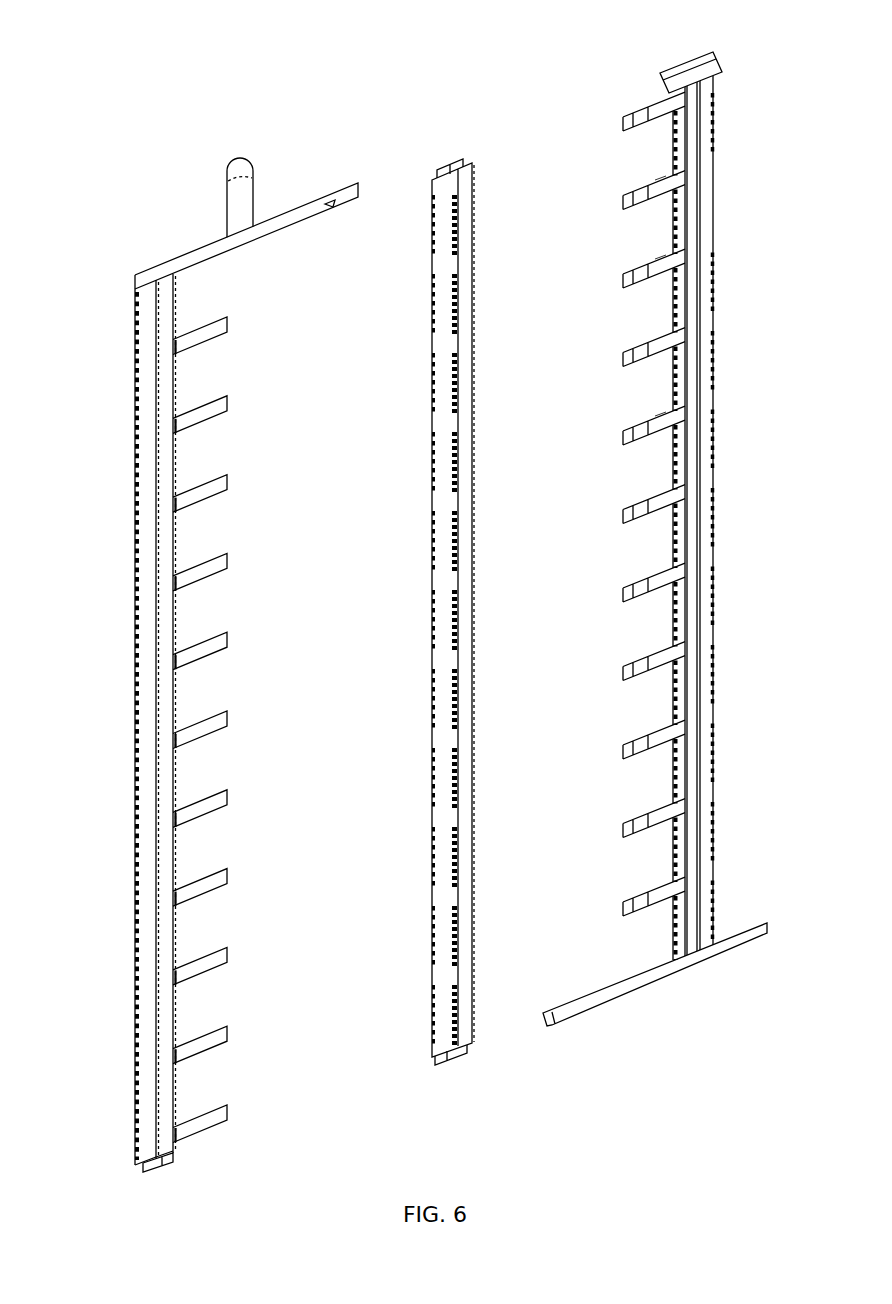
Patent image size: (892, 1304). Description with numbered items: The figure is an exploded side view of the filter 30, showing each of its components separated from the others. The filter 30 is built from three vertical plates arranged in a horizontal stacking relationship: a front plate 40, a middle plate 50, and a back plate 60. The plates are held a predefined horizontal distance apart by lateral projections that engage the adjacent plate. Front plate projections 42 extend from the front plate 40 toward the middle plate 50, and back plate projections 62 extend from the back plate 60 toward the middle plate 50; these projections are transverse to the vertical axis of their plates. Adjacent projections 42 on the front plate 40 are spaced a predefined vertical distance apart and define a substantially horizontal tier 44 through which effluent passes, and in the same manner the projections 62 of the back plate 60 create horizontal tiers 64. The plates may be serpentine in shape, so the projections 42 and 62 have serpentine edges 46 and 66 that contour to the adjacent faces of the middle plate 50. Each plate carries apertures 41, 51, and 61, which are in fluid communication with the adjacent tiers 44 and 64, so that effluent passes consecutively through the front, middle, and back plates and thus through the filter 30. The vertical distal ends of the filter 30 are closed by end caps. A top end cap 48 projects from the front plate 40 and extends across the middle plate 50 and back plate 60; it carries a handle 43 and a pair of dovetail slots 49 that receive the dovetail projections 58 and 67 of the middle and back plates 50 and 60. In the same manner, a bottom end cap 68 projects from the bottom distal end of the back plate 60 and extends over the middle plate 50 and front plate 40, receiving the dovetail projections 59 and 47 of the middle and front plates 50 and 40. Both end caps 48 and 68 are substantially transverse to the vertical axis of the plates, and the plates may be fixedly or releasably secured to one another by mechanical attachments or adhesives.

The filter 30 is at (100, 127).
The front plate 40 is at (183, 183).
The apertures 41 is at (135, 492).
The front plate projections 42 is at (228, 481).
The handle 43 is at (243, 188).
The horizontal tier 44 is at (220, 438).
The serpentine edges 46 is at (229, 1033).
The dovetail projection 47 is at (160, 1170).
The top end cap 48 is at (175, 262).
The dovetail slots 49 is at (331, 207).
The middle plate 50 is at (445, 145).
The apertures 51 is at (432, 330).
The dovetail projection 58 is at (458, 162).
The dovetail projection 59 is at (452, 1060).
The back plate 60 is at (618, 90).
The apertures 61 is at (716, 218).
The back plate projections 62 is at (658, 427).
The horizontal tiers 64 is at (637, 318).
The serpentine edges 66 is at (628, 362).
The dovetail projection 67 is at (716, 54).
The bottom end cap 68 is at (625, 985).